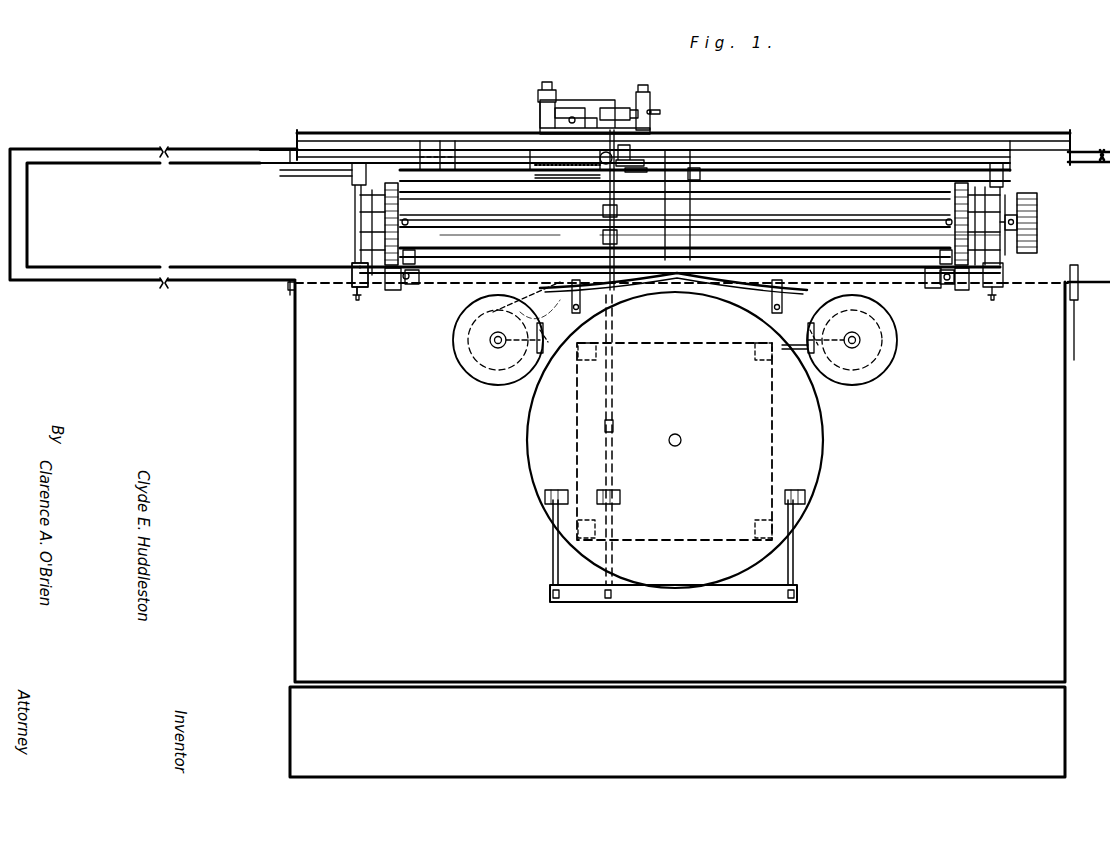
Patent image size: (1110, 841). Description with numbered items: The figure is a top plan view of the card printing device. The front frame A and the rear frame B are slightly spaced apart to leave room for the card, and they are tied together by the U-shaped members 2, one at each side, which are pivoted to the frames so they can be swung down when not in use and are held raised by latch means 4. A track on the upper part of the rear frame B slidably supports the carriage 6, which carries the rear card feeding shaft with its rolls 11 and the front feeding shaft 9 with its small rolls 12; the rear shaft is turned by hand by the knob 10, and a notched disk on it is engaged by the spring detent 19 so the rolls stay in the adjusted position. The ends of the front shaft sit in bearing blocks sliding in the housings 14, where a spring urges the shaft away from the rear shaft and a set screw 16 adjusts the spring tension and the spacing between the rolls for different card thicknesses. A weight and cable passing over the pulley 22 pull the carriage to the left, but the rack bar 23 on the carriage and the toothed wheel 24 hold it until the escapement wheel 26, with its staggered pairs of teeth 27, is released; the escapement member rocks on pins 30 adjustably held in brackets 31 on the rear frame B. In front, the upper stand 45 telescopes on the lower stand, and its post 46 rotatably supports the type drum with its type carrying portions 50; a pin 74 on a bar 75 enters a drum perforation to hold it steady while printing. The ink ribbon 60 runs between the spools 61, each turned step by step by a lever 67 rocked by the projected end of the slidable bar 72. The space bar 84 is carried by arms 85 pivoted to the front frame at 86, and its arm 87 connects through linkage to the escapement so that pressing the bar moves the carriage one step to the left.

The U-shaped member 2 is at (272, 280).
The latch means 4 is at (288, 290).
The carriage 6 is at (353, 217).
The front feeding shaft 9 is at (936, 284).
The knob 10 is at (1038, 243).
The disks or rolls 11 is at (400, 211).
The small disks or rolls 12 is at (391, 288).
The housing 14 is at (358, 287).
The set screw 16 is at (362, 292).
The spring detent 19 is at (1038, 200).
The pulley 22 is at (630, 160).
The rack bar 23 is at (453, 173).
The toothed wheel 24 is at (533, 160).
The escapement wheel 26 is at (562, 108).
The pairs of teeth 27 is at (603, 110).
The pins 30 is at (660, 112).
The brackets 31 is at (540, 100).
The upper stand 45 is at (712, 540).
The post 46 is at (682, 440).
The type carrying portions 50 is at (825, 447).
The ink ribbon 60 is at (500, 290).
The spools 61 is at (490, 385).
The lever 67 is at (553, 355).
The bar 72 is at (805, 345).
The pin 74 is at (680, 280).
The bar 75 is at (640, 285).
The space bar 84 is at (755, 600).
The arms 85 is at (552, 560).
The pivot 86 is at (806, 497).
The arm 87 is at (615, 556).
The front frame A is at (1055, 437).
The rear frame B is at (775, 130).